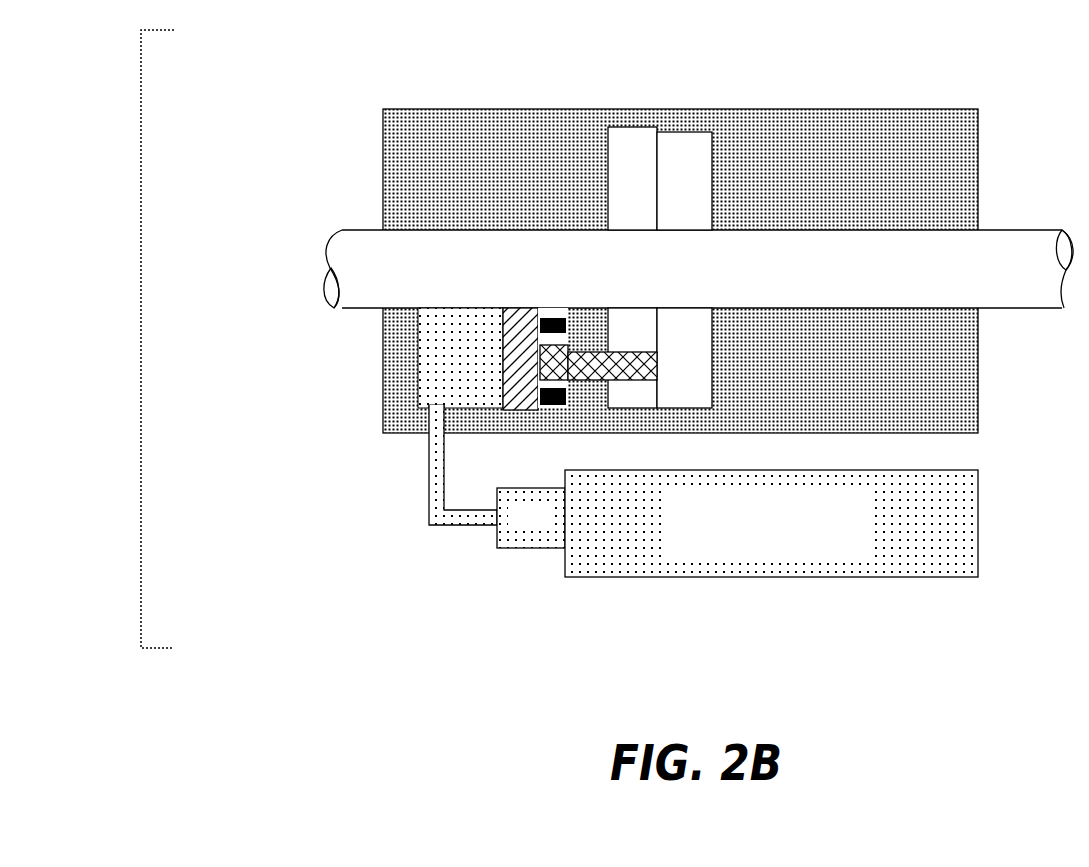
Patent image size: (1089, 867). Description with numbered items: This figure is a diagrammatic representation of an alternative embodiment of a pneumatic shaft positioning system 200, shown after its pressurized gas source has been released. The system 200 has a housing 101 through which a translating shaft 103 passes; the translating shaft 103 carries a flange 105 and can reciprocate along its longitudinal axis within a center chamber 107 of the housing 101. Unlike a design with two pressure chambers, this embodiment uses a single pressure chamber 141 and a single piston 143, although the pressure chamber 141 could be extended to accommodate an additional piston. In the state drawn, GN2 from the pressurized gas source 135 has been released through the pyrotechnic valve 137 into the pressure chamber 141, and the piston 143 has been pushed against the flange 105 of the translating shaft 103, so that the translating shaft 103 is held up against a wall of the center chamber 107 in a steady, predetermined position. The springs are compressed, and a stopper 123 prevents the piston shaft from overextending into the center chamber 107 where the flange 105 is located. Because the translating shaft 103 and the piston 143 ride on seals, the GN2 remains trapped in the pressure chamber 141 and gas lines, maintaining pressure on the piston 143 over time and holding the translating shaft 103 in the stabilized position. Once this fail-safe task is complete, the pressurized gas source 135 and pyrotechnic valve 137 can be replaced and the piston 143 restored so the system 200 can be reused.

The system 200 is at (107, 339).
The housing 101 is at (847, 109).
The translating shaft 103 is at (813, 281).
The flange 105 is at (682, 153).
The center chamber 107 is at (622, 157).
The pressure chamber 141 is at (437, 343).
The piston 143 is at (503, 372).
The stopper 123 is at (542, 368).
The pyrotechnic valve 137 is at (551, 529).
The pressurized gas source 135 is at (832, 550).